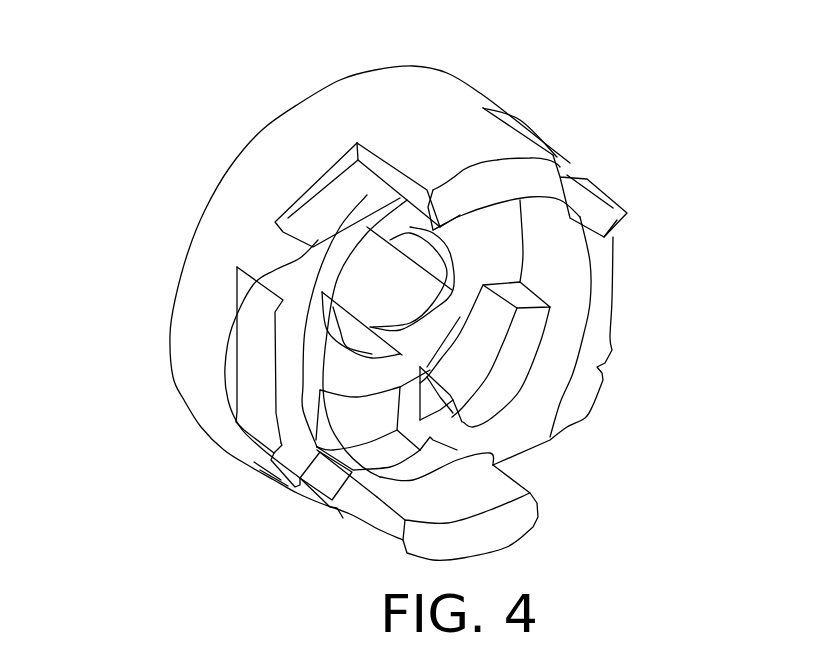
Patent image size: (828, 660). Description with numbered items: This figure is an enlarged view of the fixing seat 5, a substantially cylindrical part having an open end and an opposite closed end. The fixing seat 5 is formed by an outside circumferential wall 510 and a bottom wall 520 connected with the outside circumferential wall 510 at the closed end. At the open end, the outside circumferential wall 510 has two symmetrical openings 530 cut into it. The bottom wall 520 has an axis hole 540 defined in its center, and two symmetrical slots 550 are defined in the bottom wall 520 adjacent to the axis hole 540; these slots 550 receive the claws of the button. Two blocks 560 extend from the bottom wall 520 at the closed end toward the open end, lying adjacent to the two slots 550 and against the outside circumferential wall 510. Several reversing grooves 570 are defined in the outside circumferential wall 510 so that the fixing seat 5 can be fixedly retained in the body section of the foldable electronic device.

The fixing seat 5 is at (598, 131).
The outside circumferential wall 510 is at (312, 133).
The bottom wall 520 is at (372, 72).
The openings 530 is at (313, 267).
The axis hole 540 is at (372, 285).
The slots 550 is at (347, 418).
The blocks 560 is at (527, 327).
The reversing grooves 570 is at (582, 174).